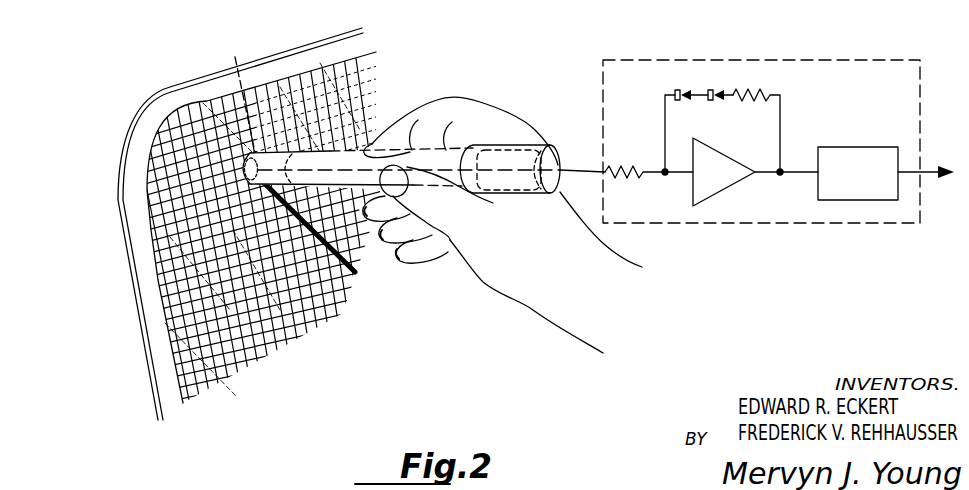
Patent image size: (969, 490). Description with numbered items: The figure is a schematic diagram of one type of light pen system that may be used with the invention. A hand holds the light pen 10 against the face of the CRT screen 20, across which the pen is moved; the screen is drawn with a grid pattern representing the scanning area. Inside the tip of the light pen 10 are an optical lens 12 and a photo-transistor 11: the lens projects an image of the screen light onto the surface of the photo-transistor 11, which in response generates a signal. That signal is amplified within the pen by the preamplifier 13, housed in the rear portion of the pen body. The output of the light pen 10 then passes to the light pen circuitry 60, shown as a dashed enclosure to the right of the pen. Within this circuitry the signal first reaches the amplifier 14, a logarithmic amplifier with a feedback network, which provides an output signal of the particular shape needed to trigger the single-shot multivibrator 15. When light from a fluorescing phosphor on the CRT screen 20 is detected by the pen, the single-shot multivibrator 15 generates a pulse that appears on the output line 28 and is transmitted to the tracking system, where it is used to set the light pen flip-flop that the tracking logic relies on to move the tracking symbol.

The light pen 10 is at (418, 141).
The photo-transistor 11 is at (360, 137).
The optical lens 12 is at (236, 94).
The preamplifier 13 is at (512, 150).
The amplifier 14 is at (722, 183).
The single-shot multivibrator 15 is at (860, 147).
The CRT screen 20 is at (330, 278).
The output line 28 is at (933, 180).
The light pen circuitry 60 is at (757, 176).